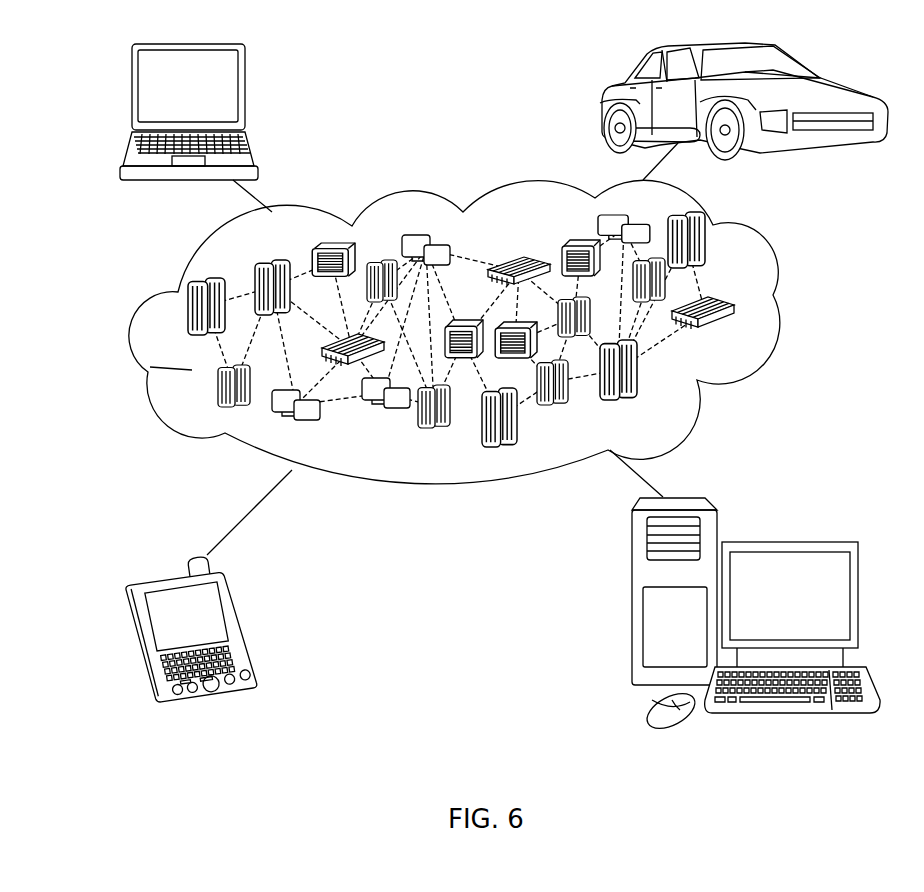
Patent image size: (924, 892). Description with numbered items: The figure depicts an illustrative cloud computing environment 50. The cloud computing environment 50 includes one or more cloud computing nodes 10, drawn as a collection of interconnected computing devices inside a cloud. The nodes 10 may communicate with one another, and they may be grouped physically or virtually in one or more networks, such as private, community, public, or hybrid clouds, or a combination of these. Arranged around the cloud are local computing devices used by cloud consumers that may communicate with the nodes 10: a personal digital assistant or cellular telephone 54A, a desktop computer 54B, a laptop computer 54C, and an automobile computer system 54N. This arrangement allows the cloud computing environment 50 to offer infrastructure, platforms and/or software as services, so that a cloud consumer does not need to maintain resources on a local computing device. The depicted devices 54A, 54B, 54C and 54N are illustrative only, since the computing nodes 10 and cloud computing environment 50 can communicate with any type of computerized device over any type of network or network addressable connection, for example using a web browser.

The cloud computing nodes 10 is at (738, 336).
The cloud computing environment 50 is at (788, 308).
The personal digital assistant (PDA) or cellular telephone 54A is at (248, 623).
The desktop computer 54B is at (787, 542).
The laptop computer 54C is at (249, 92).
The automobile computer system 54N is at (603, 102).